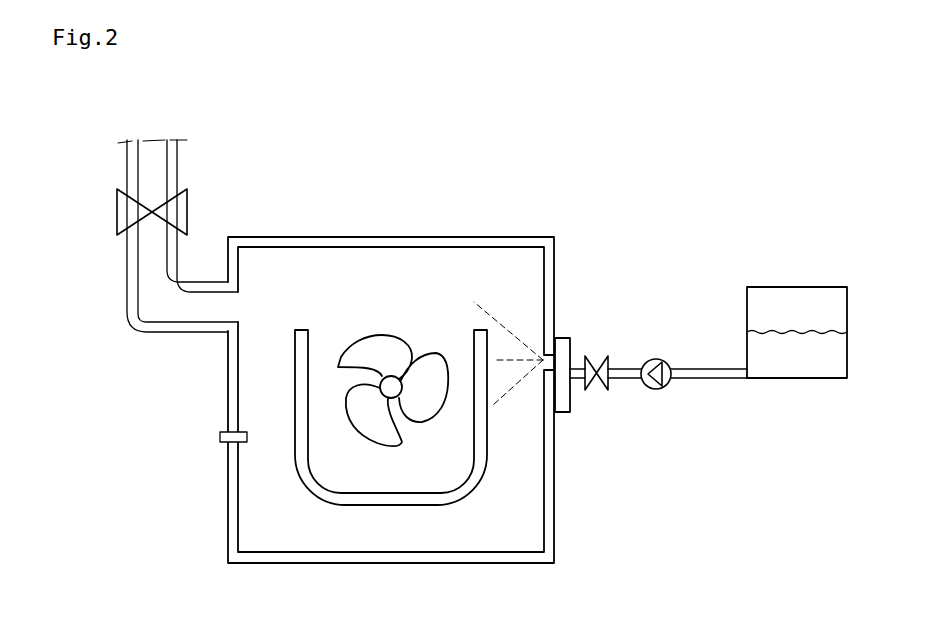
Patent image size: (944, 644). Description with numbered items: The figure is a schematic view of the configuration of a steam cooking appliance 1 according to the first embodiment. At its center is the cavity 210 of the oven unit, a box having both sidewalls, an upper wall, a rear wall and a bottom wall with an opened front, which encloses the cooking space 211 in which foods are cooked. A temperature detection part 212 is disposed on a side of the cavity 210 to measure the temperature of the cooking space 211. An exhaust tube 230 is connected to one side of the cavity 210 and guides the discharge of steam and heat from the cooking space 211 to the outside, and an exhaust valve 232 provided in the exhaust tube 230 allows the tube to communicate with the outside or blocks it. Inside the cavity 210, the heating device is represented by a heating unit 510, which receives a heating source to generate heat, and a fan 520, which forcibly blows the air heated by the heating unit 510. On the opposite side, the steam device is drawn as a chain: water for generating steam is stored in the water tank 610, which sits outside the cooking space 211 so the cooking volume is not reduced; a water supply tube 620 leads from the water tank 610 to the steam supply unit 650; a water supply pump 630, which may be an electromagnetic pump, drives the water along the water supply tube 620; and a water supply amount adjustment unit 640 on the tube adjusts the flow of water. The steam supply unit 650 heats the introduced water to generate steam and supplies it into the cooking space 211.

The steam cooking appliance 1 is at (793, 107).
The cavity 210 is at (329, 240).
The cooking space 211 is at (382, 264).
The temperature detection part 212 is at (219, 435).
The exhaust tube 230 is at (130, 161).
The exhaust valve 232 is at (118, 210).
The heating unit 510 is at (357, 497).
The fan 520 is at (390, 437).
The water tank 610 is at (793, 370).
The water supply tube 620 is at (715, 375).
The water supply pump 630 is at (657, 358).
The water supply amount adjustment unit 640 is at (599, 355).
The steam supply unit 650 is at (563, 412).